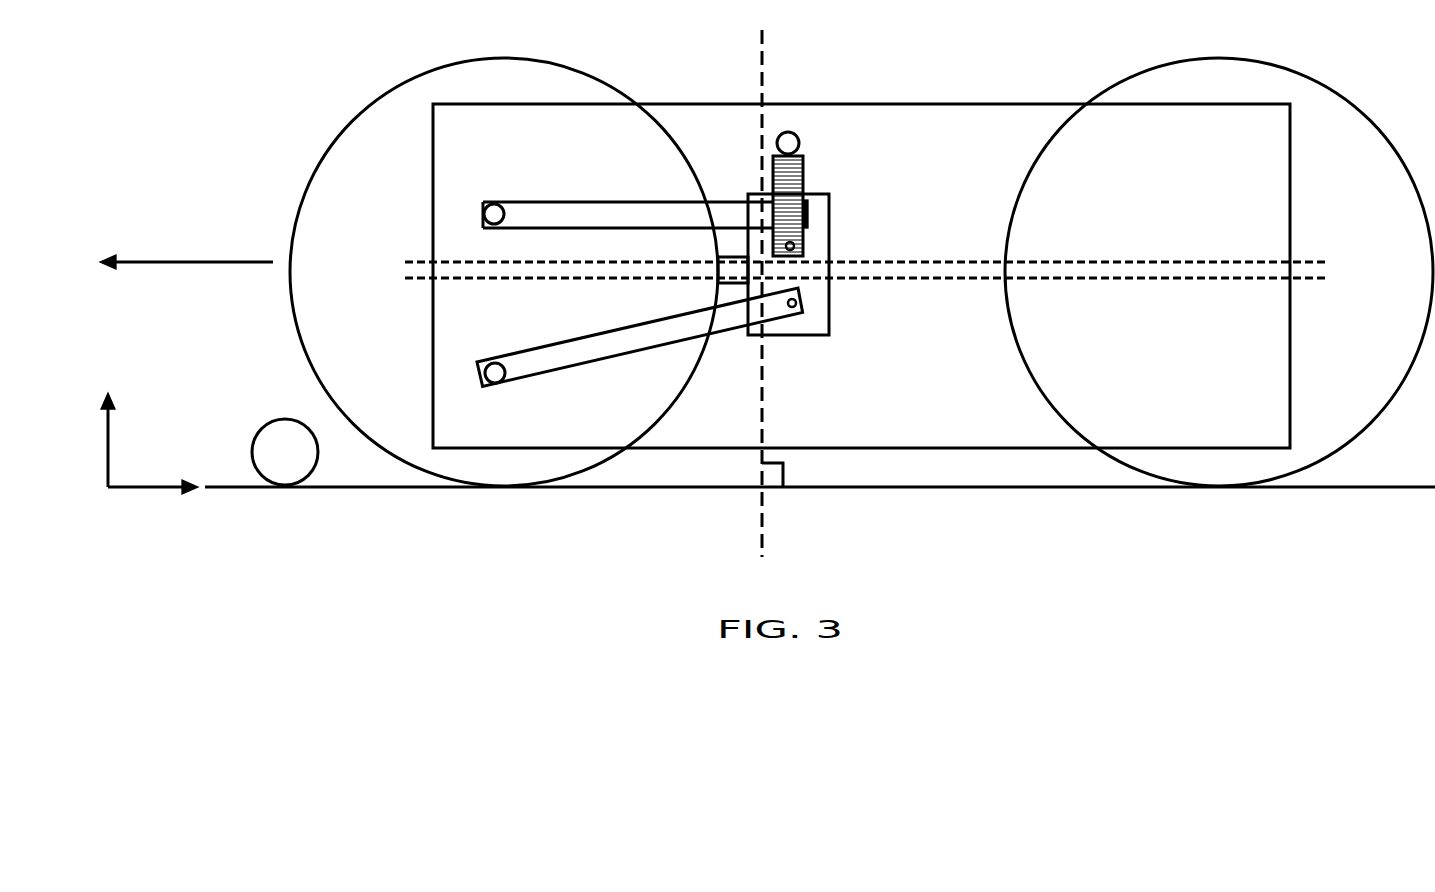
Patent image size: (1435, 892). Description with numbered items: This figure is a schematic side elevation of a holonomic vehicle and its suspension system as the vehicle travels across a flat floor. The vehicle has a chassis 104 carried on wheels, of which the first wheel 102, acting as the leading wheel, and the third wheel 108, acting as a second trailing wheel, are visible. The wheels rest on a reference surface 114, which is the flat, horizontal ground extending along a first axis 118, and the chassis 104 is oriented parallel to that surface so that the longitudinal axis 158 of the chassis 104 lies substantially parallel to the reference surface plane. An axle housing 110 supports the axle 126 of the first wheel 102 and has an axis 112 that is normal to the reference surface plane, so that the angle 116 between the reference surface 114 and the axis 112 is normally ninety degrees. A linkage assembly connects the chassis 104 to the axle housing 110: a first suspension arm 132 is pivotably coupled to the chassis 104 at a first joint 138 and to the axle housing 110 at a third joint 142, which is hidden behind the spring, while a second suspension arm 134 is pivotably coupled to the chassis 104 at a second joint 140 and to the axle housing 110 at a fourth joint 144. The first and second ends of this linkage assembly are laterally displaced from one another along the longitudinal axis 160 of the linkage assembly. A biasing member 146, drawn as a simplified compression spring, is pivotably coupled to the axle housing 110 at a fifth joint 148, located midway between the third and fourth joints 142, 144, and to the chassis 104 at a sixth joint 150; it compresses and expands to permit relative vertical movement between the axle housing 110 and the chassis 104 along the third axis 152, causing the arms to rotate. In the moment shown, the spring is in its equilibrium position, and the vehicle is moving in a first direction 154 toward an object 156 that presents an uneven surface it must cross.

The first wheel 102 is at (368, 108).
The chassis 104 is at (865, 103).
The third wheel 108 is at (1283, 66).
The axle housing 110 is at (832, 298).
The axis 112 is at (760, 535).
The reference surface 114 is at (338, 484).
The angle 116 is at (785, 470).
The first axis 118 is at (150, 490).
The axle 126 is at (725, 256).
The first suspension arm 132 is at (555, 200).
The second suspension arm 134 is at (555, 357).
The first joint 138 is at (492, 202).
The second joint 140 is at (491, 362).
The third joint 142 is at (810, 212).
The fourth joint 144 is at (803, 312).
The biasing member 146 is at (806, 170).
The fifth joint 148 is at (795, 245).
The sixth joint 150 is at (800, 143).
The third axis 152 is at (110, 445).
The first direction 154 is at (203, 258).
The object 156 is at (285, 418).
The longitudinal axis of the chassis 158 is at (1306, 261).
The longitudinal axis of the linkage assembly 160 is at (1226, 281).